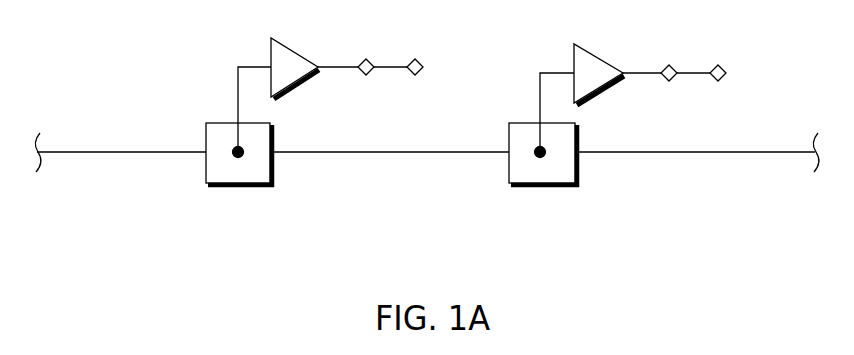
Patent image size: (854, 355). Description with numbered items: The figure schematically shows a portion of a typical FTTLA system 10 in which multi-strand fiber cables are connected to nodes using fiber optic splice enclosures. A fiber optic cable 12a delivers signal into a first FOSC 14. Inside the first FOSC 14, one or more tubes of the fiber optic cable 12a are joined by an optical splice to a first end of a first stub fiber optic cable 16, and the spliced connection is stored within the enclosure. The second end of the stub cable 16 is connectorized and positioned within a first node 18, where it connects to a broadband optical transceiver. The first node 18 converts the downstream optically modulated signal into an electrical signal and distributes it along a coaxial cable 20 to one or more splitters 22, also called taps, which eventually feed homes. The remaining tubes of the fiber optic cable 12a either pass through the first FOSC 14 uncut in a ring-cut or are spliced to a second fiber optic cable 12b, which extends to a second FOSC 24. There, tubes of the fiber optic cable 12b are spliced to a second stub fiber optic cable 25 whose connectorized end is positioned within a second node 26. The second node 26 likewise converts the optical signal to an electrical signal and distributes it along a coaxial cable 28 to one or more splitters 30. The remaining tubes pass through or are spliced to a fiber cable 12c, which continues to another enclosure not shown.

The FTTLA system 10 is at (83, 114).
The fiber optic cable 12a is at (137, 152).
The second fiber optic cable 12b is at (437, 152).
The fiber cable 12c is at (723, 152).
The first FOSC 14 is at (240, 185).
The first stub fiber optic cable 16 is at (237, 81).
The first node 18 is at (268, 47).
The coaxial cable 20 is at (326, 67).
The splitters 22 is at (366, 75).
The second FOSC 24 is at (543, 185).
The second stub fiber optic cable 25 is at (540, 88).
The second node 26 is at (572, 54).
The coaxial cable 28 is at (630, 73).
The splitters 30 is at (669, 81).